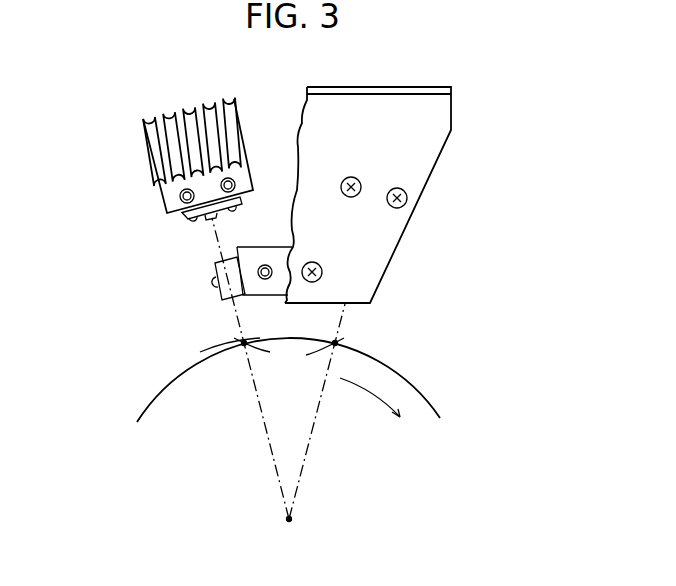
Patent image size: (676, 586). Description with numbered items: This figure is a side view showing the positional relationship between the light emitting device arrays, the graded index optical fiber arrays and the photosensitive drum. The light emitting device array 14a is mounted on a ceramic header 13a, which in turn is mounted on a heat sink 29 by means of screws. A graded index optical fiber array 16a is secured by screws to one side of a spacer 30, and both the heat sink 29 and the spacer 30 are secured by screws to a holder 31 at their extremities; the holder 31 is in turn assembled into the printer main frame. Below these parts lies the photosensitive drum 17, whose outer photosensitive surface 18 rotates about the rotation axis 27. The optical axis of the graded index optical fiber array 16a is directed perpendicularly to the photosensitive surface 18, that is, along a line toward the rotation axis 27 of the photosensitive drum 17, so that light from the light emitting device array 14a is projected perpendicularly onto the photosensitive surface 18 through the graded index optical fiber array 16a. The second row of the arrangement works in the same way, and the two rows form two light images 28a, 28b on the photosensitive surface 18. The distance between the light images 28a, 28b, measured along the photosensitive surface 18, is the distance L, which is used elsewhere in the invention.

The ceramic header 13a is at (182, 223).
The light emitting device array 14a is at (188, 241).
The graded index optical fiber array 16a is at (194, 282).
The photosensitive drum 17 is at (266, 380).
The photosensitive surface 18 is at (186, 353).
The rotation axis 27 is at (271, 373).
The light image 28a is at (206, 335).
The light image 28b is at (378, 334).
The heat sink 29 is at (198, 126).
The spacer 30 is at (264, 246).
The holder 31 is at (411, 195).
The distance between light images L is at (289, 354).